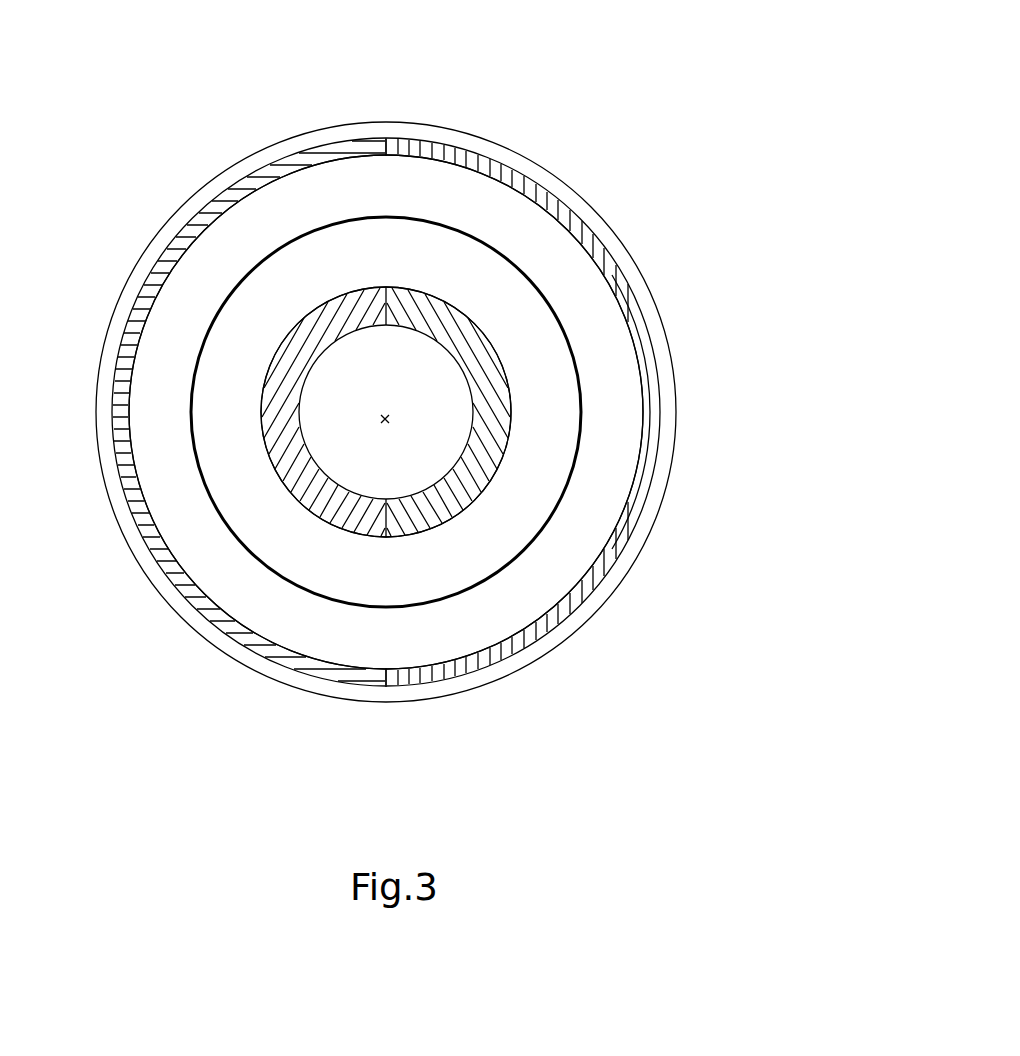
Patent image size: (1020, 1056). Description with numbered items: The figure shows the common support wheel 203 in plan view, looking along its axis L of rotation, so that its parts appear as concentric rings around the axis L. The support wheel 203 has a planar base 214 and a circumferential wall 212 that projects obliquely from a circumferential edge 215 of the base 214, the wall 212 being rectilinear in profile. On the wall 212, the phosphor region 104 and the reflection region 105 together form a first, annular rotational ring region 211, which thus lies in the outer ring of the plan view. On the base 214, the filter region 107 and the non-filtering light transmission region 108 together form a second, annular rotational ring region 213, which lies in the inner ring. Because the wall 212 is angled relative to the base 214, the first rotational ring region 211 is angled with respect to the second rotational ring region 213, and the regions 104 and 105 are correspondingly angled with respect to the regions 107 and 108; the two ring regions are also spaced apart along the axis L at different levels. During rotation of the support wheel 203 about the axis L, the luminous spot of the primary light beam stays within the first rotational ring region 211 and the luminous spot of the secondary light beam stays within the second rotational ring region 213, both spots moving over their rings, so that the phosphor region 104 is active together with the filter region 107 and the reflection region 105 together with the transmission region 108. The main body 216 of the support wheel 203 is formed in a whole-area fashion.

The support wheel 203 is at (590, 107).
The first rotational ring region 211 is at (423, 412).
The phosphor region 104 is at (143, 303).
The reflection region 105 is at (648, 386).
The main body 216 is at (587, 207).
The circumferential edge 215 is at (562, 497).
The wall 212 is at (545, 578).
The base 214 is at (283, 280).
The second rotational ring region 213 is at (417, 439).
The filter region 107 is at (290, 433).
The non-filtering light transmission region 108 is at (497, 425).
The axis of rotation L is at (393, 418).